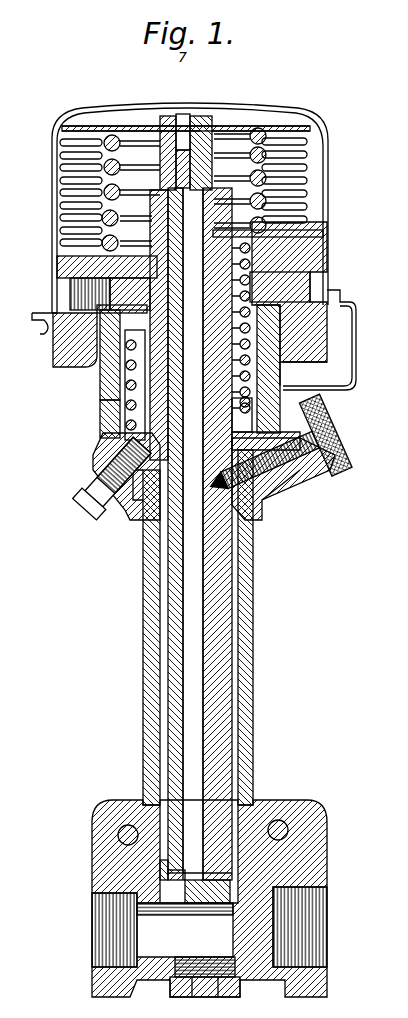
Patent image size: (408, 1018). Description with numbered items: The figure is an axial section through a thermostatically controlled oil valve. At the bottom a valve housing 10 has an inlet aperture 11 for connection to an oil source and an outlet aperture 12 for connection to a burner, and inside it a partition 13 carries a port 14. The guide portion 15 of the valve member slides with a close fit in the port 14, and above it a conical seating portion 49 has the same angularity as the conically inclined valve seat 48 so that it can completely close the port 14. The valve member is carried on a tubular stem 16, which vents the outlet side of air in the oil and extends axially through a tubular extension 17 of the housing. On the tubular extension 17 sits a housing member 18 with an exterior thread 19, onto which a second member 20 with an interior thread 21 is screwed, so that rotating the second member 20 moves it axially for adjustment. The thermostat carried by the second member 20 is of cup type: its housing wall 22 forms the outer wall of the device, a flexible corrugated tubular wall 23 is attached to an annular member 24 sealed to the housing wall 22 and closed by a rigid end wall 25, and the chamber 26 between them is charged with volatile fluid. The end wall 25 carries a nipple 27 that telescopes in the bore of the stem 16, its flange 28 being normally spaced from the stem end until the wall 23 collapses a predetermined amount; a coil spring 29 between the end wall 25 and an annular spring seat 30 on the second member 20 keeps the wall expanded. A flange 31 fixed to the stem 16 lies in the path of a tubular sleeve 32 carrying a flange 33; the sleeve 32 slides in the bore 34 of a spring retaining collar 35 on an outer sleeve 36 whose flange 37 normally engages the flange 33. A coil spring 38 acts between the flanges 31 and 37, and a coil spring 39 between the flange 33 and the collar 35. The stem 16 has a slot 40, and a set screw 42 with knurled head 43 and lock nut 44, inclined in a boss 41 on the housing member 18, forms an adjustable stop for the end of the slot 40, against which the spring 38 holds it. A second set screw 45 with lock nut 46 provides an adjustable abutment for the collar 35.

The valve housing 10 is at (282, 808).
The inlet aperture 11 is at (310, 940).
The outlet aperture 12 is at (100, 940).
The partition 13 is at (238, 893).
The port 14 is at (202, 905).
The guide portion 15 is at (240, 880).
The stem 16 is at (220, 660).
The tubular extension 17 is at (252, 612).
The housing member 18 is at (106, 412).
The exterior thread 19 is at (100, 372).
The second member 20 is at (316, 304).
The interior thread 21 is at (300, 343).
The housing wall 22 is at (329, 138).
The flexible corrugated tubular wall 23 is at (304, 176).
The annular member 24 is at (326, 232).
The end wall 25 is at (242, 122).
The chamber 26 is at (290, 118).
The nipple 27 is at (172, 126).
The flange 28 is at (208, 126).
The coil spring 29 is at (80, 196).
The annular spring seat 30 is at (85, 266).
The flange 31 is at (80, 228).
The tubular sleeve 32 is at (155, 298).
The flange 33 is at (280, 287).
The bore 34 is at (282, 420).
The spring retaining collar 35 is at (302, 432).
The outer sleeve 36 is at (268, 380).
The flange 37 is at (125, 314).
The coil spring 38 is at (72, 296).
The coil spring 39 is at (282, 340).
The slot 40 is at (200, 470).
The boss 41 is at (285, 490).
The set screw 42 is at (262, 500).
The knurled head 43 is at (343, 456).
The lock nut 44 is at (322, 483).
The second adjustable set screw 45 is at (102, 488).
The lock nut 46 is at (125, 498).
The valve seat 48 is at (180, 874).
The conical seating portion 49 is at (165, 862).